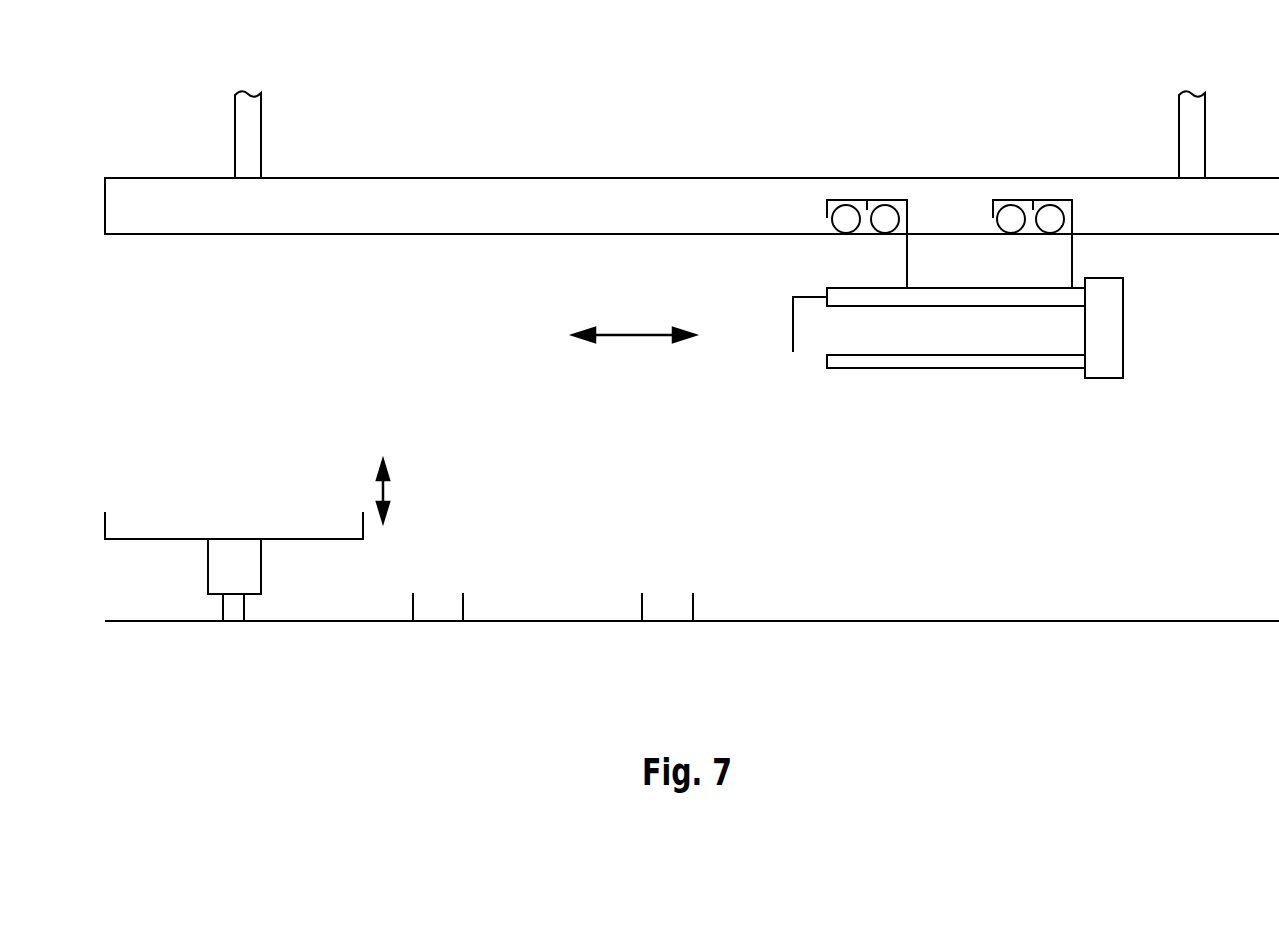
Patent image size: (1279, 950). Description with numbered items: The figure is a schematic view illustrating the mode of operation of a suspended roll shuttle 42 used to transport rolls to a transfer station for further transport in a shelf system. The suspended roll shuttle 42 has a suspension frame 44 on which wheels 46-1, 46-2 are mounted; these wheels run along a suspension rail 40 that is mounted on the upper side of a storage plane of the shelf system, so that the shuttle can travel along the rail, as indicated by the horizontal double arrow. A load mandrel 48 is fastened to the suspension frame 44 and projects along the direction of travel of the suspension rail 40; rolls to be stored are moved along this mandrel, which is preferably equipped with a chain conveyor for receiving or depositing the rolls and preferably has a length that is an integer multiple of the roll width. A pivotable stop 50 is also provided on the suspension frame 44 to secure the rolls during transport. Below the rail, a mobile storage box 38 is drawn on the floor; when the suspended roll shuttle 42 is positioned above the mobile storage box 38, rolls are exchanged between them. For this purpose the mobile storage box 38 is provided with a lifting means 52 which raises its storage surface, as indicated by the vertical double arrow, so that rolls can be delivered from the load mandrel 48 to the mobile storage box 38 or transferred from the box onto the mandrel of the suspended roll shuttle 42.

The mobile storage box 38 is at (107, 518).
The suspension rail 40 is at (485, 178).
The suspended roll shuttle 42 is at (820, 268).
The suspension frame 44 is at (1138, 315).
The wheel 46-1 is at (884, 200).
The wheel 46-2 is at (1046, 200).
The load mandrel 48 is at (943, 368).
The pivotable stop 50 is at (790, 308).
The lifting means 52 is at (261, 568).